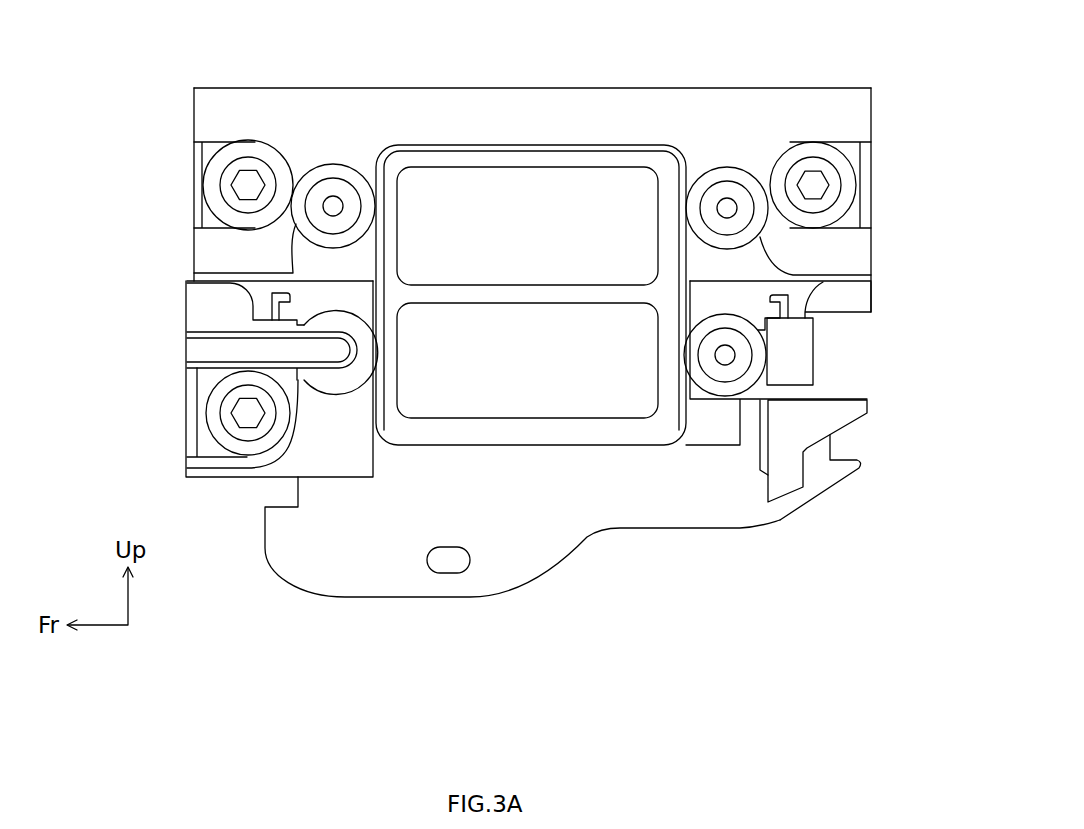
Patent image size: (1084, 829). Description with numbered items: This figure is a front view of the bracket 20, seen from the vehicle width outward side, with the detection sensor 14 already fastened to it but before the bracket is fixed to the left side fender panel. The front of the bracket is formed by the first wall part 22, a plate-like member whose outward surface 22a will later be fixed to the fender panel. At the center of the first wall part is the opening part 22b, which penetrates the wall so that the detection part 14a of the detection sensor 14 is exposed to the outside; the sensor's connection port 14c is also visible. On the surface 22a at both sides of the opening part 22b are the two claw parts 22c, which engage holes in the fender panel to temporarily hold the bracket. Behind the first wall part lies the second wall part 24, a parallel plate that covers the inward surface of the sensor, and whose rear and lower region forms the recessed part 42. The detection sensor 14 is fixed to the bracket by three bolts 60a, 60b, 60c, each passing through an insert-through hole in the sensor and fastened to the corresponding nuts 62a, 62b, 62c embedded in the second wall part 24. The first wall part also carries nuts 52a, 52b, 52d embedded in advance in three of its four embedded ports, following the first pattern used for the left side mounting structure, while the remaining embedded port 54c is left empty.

The bracket 20 is at (240, 53).
The first wall part 22 is at (323, 80).
The surface 22a is at (380, 110).
The opening part 22b is at (446, 150).
The claw part 22c is at (257, 300).
The detection sensor 14 is at (680, 458).
The detection part 14a is at (560, 362).
The connection port 14c is at (805, 360).
The second wall part 24 is at (366, 608).
The recessed part 42 is at (856, 346).
The nut 52a is at (305, 213).
The nut 52b is at (724, 170).
The nut 52d is at (732, 388).
The embedded port 54c is at (341, 383).
The bolt 60a is at (238, 180).
The bolt 60b is at (818, 180).
The bolt 60c is at (242, 410).
The nut 62a is at (222, 207).
The nut 62b is at (848, 197).
The nut 62c is at (223, 437).